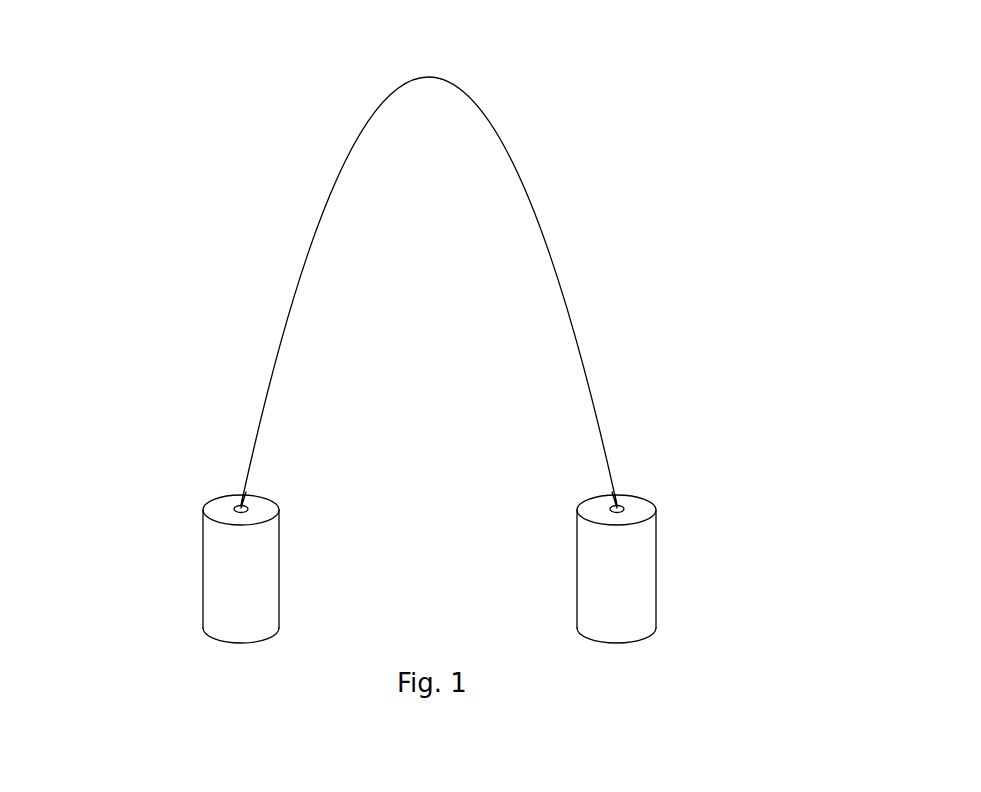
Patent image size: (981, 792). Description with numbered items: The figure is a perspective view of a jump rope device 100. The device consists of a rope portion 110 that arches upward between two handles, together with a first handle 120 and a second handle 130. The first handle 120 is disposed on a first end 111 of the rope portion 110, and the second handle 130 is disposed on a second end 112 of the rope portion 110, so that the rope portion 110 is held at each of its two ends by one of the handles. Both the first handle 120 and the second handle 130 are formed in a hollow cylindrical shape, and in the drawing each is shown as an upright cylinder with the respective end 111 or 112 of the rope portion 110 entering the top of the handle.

The jump rope device 100 is at (285, 143).
The rope portion 110 is at (580, 337).
The first end 111 is at (240, 496).
The second end 112 is at (618, 500).
The first handle 120 is at (203, 569).
The second handle 130 is at (656, 570).